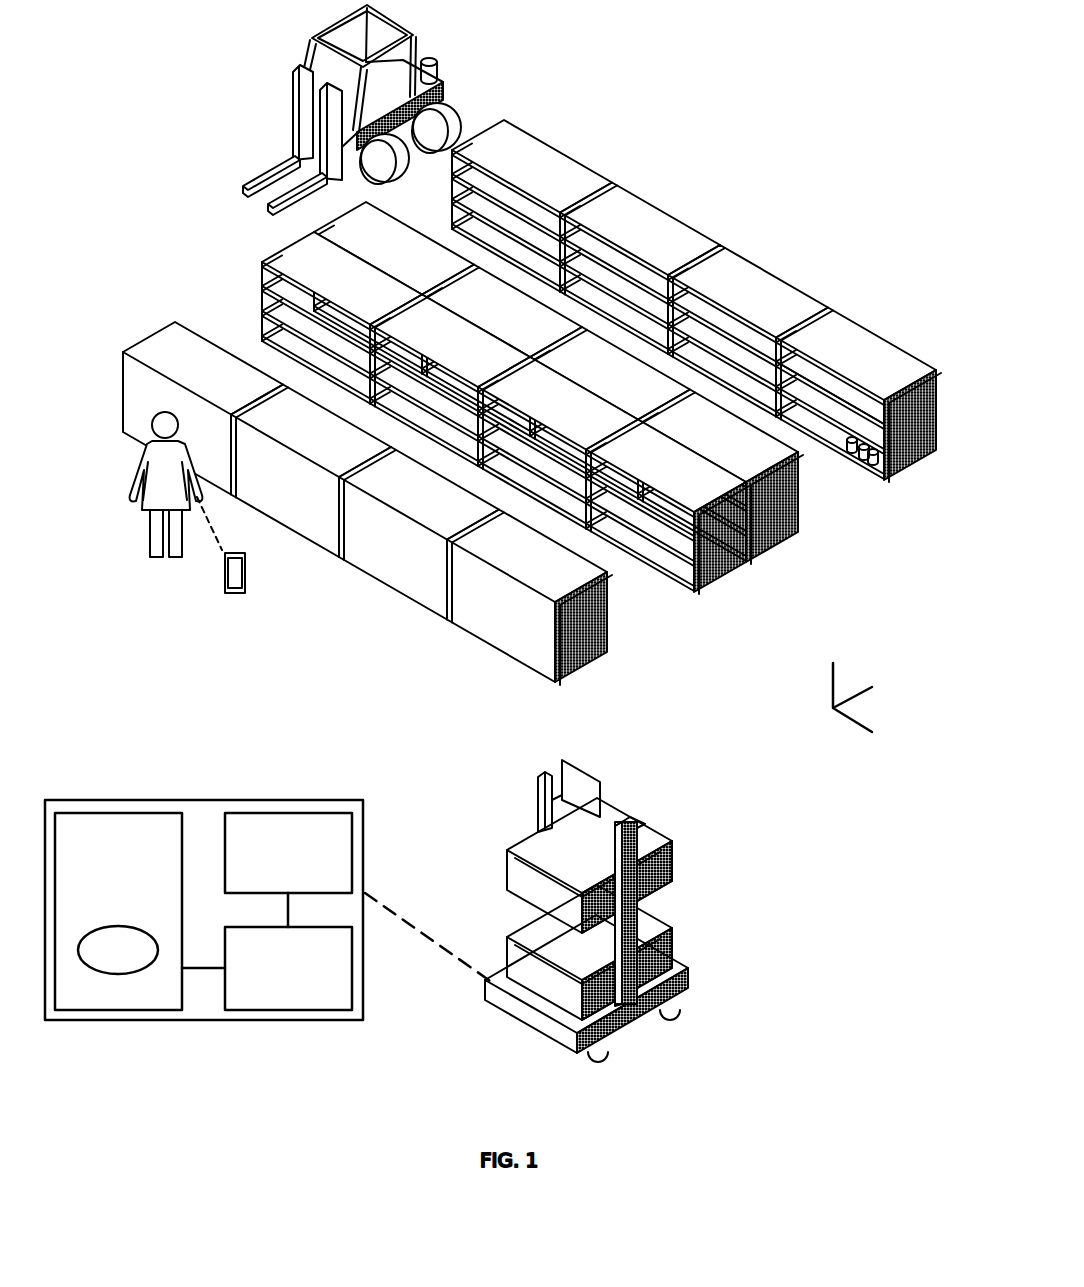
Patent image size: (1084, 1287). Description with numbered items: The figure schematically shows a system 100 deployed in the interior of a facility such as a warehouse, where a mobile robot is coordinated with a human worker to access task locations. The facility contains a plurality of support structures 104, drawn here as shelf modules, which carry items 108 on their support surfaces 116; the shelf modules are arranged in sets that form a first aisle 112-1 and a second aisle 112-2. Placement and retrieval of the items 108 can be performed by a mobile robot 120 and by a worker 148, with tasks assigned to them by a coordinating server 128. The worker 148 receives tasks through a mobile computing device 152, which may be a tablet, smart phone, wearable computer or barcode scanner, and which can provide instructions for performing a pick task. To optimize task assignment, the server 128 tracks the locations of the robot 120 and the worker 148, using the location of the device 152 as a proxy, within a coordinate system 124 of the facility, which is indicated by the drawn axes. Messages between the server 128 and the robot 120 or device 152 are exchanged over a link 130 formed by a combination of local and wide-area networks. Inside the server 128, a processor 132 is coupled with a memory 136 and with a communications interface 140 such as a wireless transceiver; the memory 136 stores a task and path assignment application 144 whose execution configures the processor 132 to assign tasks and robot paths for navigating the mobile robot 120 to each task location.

The system 100 is at (760, 125).
The support structures 104 is at (858, 352).
The items 108 is at (878, 458).
The aisle 112-1 is at (620, 600).
The aisle 112-2 is at (818, 478).
The support surfaces 116 is at (858, 398).
The mobile robot 120 is at (730, 992).
The coordinate system 124 is at (833, 708).
The server 128 is at (204, 958).
The link 130 is at (429, 938).
The processor 132 is at (272, 967).
The memory 136 is at (101, 845).
The communications interface 140 is at (272, 842).
The task and path assignment application 144 is at (102, 961).
The worker 148 is at (152, 557).
The mobile computing device 152 is at (233, 593).